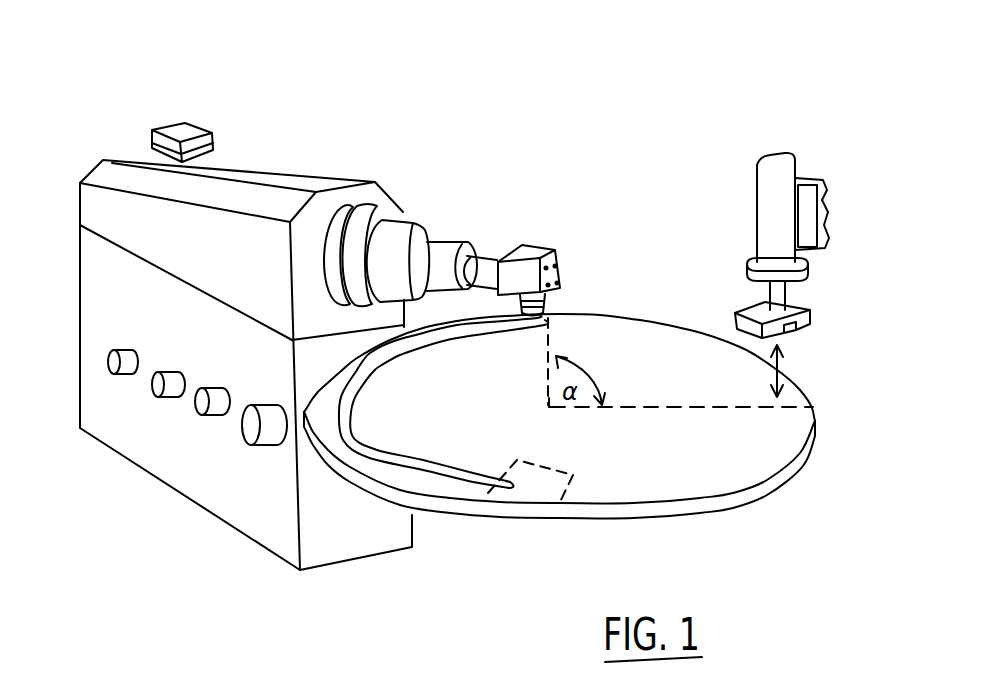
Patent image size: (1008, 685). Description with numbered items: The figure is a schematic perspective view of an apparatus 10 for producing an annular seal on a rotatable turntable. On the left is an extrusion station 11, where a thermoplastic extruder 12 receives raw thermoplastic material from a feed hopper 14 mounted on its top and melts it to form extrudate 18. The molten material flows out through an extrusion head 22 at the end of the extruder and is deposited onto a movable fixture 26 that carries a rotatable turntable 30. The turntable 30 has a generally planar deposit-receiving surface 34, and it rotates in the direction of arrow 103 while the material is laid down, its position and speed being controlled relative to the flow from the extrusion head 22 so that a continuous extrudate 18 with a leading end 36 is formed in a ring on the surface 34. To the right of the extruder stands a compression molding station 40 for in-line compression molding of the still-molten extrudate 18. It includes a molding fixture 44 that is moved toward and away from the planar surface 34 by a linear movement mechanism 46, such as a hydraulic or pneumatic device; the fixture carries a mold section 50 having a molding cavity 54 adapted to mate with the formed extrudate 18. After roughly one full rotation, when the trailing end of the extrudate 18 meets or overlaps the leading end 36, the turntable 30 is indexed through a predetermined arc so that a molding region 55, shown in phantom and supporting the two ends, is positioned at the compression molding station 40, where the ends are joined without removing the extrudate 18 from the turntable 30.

The apparatus 10 is at (622, 80).
The extrusion station 11 is at (486, 185).
The thermoplastic extruder 12 is at (95, 202).
The feed hopper 14 is at (175, 125).
The extrudate 18 is at (375, 452).
The extrusion head 22 is at (520, 252).
The movable fixture 26 is at (767, 483).
The rotatable turntable 30 is at (816, 414).
The deposit-receiving surface 34 is at (700, 461).
The leading end 36 is at (515, 483).
The compression molding station 40 is at (784, 270).
The molding fixture 44 is at (788, 298).
The linear movement mechanism 46 is at (780, 185).
The mold section 50 is at (808, 318).
The molding cavity 54 is at (793, 333).
The molding region 55 is at (547, 490).
The arrow 103 is at (541, 552).